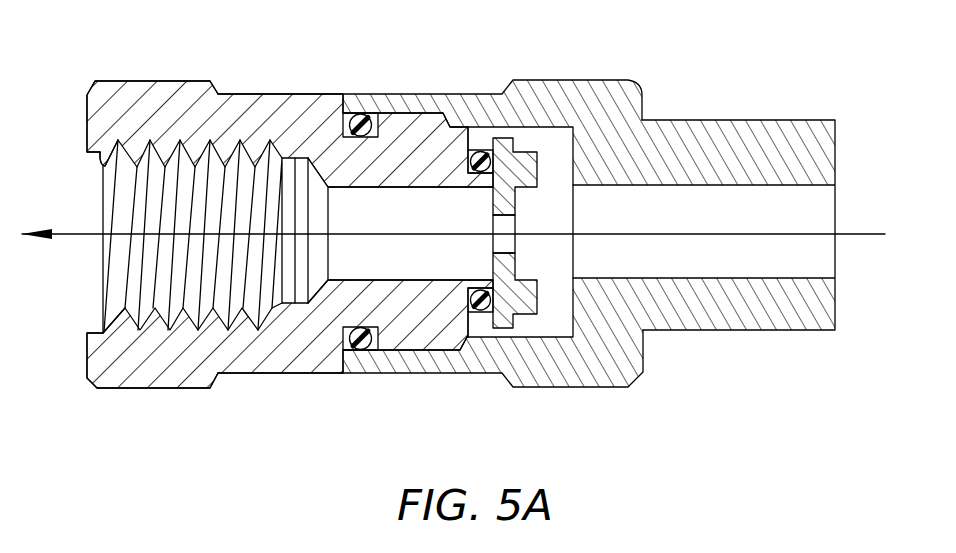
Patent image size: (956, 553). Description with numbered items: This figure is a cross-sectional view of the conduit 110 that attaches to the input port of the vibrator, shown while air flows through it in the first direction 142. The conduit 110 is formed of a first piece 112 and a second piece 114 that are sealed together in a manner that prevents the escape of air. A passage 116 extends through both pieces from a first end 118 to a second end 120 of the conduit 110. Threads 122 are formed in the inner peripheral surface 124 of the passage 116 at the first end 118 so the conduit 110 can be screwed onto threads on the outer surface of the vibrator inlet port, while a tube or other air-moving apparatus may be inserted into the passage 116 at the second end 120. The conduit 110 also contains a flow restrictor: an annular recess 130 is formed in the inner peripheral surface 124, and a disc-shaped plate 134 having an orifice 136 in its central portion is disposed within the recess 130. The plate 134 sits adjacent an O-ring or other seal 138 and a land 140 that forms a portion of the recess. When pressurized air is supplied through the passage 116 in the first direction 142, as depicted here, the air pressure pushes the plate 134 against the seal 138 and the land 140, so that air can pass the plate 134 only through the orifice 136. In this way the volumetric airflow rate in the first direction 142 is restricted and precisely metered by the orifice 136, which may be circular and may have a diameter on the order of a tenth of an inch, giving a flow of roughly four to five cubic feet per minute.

The conduit 110 is at (182, 70).
The first piece 112 is at (253, 363).
The second piece 114 is at (558, 375).
The passage 116 is at (372, 258).
The first end 118 is at (115, 382).
The second end 120 is at (815, 303).
The threads 122 is at (103, 163).
The inner peripheral surface 124 is at (354, 200).
The annular recess 130 is at (558, 130).
The plate 134 is at (500, 160).
The orifice 136 is at (497, 227).
The seal 138 is at (477, 152).
The land 140 is at (482, 285).
The first direction 142 is at (850, 232).